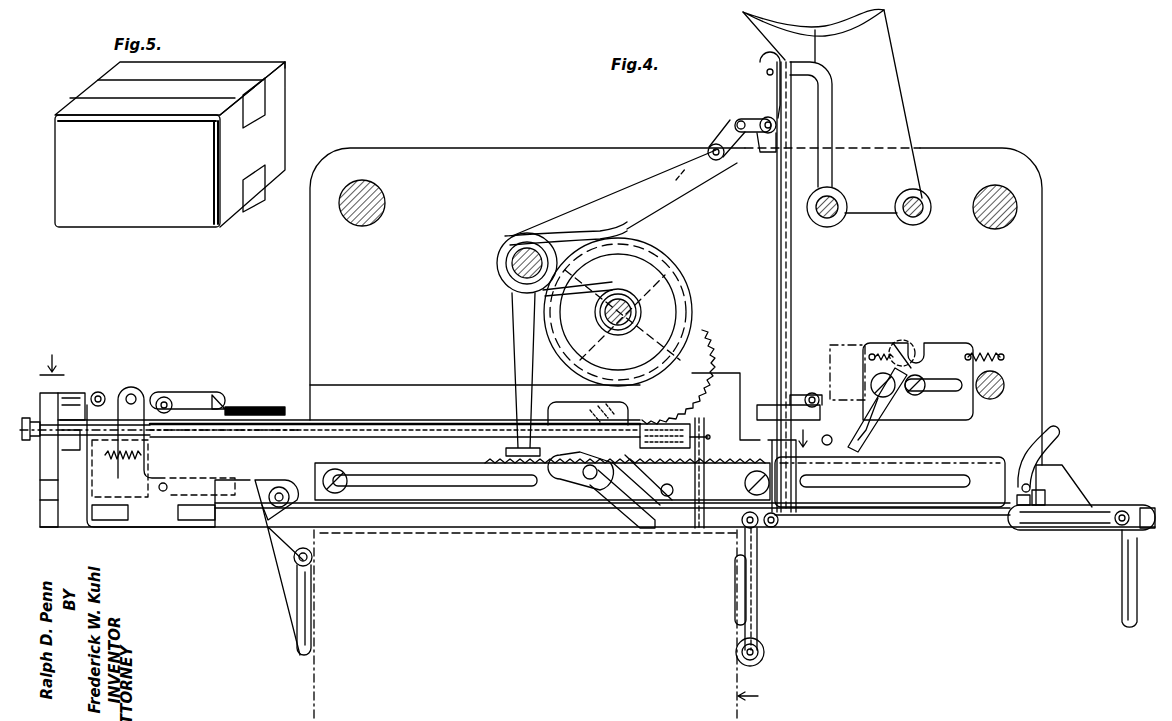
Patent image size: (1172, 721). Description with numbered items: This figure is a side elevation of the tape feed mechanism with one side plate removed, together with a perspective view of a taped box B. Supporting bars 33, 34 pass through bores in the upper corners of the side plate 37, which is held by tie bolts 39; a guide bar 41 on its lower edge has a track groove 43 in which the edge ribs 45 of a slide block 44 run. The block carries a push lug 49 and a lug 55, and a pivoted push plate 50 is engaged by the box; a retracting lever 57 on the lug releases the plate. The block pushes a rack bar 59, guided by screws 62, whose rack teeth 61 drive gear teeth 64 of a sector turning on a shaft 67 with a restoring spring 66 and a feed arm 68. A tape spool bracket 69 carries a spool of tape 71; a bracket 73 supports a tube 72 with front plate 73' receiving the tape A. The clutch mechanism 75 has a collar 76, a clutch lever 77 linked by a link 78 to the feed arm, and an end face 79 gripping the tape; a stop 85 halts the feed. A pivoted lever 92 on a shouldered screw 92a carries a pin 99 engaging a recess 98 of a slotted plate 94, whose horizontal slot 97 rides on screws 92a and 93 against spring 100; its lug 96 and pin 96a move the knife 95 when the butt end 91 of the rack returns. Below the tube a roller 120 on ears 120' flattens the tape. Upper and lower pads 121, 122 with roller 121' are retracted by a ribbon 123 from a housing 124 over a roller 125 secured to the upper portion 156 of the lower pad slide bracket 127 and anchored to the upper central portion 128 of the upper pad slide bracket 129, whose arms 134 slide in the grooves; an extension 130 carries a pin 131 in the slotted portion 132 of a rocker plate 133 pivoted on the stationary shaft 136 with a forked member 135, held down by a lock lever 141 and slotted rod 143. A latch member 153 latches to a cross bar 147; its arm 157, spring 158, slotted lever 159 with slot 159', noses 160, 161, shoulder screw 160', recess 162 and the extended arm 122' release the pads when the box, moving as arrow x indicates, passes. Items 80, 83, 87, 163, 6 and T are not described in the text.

In FIG. 4, the supporting bar 33 is at (372, 190).
In FIG. 4, the supporting bar 34 is at (996, 188).
In FIG. 4, the side plate 37 is at (676, 306).
In FIG. 4, the tie bolt 39 is at (903, 218).
In FIG. 4, the guide bar 41 is at (513, 512).
In FIG. 4, the track groove 43 is at (458, 522).
In FIG. 4, the slide block 44 is at (1020, 532).
In FIG. 4, the edge rib 45 is at (1050, 522).
In FIG. 4, the push lug 49 is at (1050, 472).
In FIG. 4, the push plate 50 is at (1125, 598).
In FIG. 4, the lug 55 is at (1046, 489).
In FIG. 4, the retracting lever 57 is at (1050, 452).
In FIG. 4, the rack bar 59 is at (459, 469).
In FIG. 4, the rack teeth 61 is at (711, 436).
In FIG. 4, the screw 62 is at (338, 470).
In FIG. 4, the gear teeth 64 is at (699, 376).
In FIG. 4, the spring 66 is at (561, 228).
In FIG. 4, the sector shaft 67 is at (512, 265).
In FIG. 4, the sector feed arm 68 is at (616, 197).
In FIG. 4, the tape spool bracket 69 is at (832, 111).
In FIG. 4, the spool of tape 71 is at (885, 14).
In FIG. 4, the tube 72 is at (796, 266).
In FIG. 4, the bracket 73 is at (841, 194).
In FIG. 4, the front plate 73' is at (760, 287).
In FIG. 4, the clutch mechanism 75 is at (762, 152).
In FIG. 4, the clutch collar 76 is at (792, 132).
In FIG. 4, the clutch lever 77 is at (749, 114).
In FIG. 4, the link 78 is at (711, 136).
In FIG. 4, the clutch end face 79 is at (775, 140).
In FIG. 4, the bracket 80 is at (772, 448).
In FIG. 4, the lower bar 83 is at (928, 522).
In FIG. 4, the stop 85 is at (848, 451).
In FIG. 4, the bar 87 is at (866, 526).
In FIG. 4, the butt end 91 is at (1000, 459).
In FIG. 4, the pivoted lever 92 is at (900, 448).
In FIG. 4, the shouldered screw 92a is at (903, 393).
In FIG. 4, the screw 93 is at (948, 385).
In FIG. 4, the slotted plate 94 is at (971, 351).
In FIG. 4, the knife 95 is at (822, 394).
In FIG. 4, the lug 96 is at (838, 406).
In FIG. 4, the pin 96a is at (840, 438).
In FIG. 4, the horizontal slot 97 is at (960, 409).
In FIG. 4, the recessed portion 98 is at (917, 346).
In FIG. 4, the pin 99 is at (907, 346).
In FIG. 4, the spring 100 is at (1001, 362).
In FIG. 4, the roller 120 is at (770, 547).
In FIG. 4, the ears 120' is at (797, 535).
In FIG. 4, the upper pad 121 is at (727, 589).
In FIG. 4, the roller 121' is at (763, 663).
In FIG. 4, the lower pad 122 is at (308, 580).
In FIG. 4, the extended arm 122' is at (256, 530).
In FIG. 4, the ribbon 123 is at (396, 420).
In FIG. 4, the housing 124 is at (672, 293).
In FIG. 4, the roller 125 is at (133, 385).
In FIG. 4, the lower pad slide bracket 127 is at (165, 528).
In FIG. 4, the upper central portion 128 is at (683, 424).
In FIG. 4, the upper pad slide bracket 129 is at (595, 512).
In FIG. 4, the extension 130 is at (186, 392).
In FIG. 4, the pin 131 is at (222, 394).
In FIG. 4, the slotted portion 132 is at (583, 404).
In FIG. 4, the rocker plate member 133 is at (599, 403).
In FIG. 4, the arms 134 is at (688, 473).
In FIG. 4, the forked member 135 is at (646, 516).
In FIG. 4, the stationary shaft 136 is at (580, 481).
In FIG. 4, the lock lever 141 is at (744, 482).
In FIG. 4, the slotted rod 143 is at (708, 430).
In FIG. 4, the cross bar 147 is at (42, 482).
In FIG. 4, the latch member 153 is at (82, 396).
In FIG. 4, the upper portion 156 is at (148, 456).
In FIG. 4, the arm 157 is at (75, 450).
In FIG. 4, the spring 158 is at (148, 472).
In FIG. 4, the slotted lever 159 is at (136, 542).
In FIG. 4, the slot 159' is at (206, 474).
In FIG. 4, the nose 160 is at (117, 529).
In FIG. 4, the shoulder screw 160' is at (183, 480).
In FIG. 4, the nose 161 is at (220, 527).
In FIG. 4, the recessed portion 162 is at (67, 486).
In FIG. 4, the bar 163 is at (280, 407).
In FIG. 4, the section line 6 is at (429, 402).
In FIG. 4, the tape A is at (767, 47).
In FIG. 5, the box B is at (170, 144).
In FIG. 4, the box B is at (315, 714).
In FIG. 5, the tape strip T is at (266, 172).
In FIG. 4, the arrow x is at (749, 625).